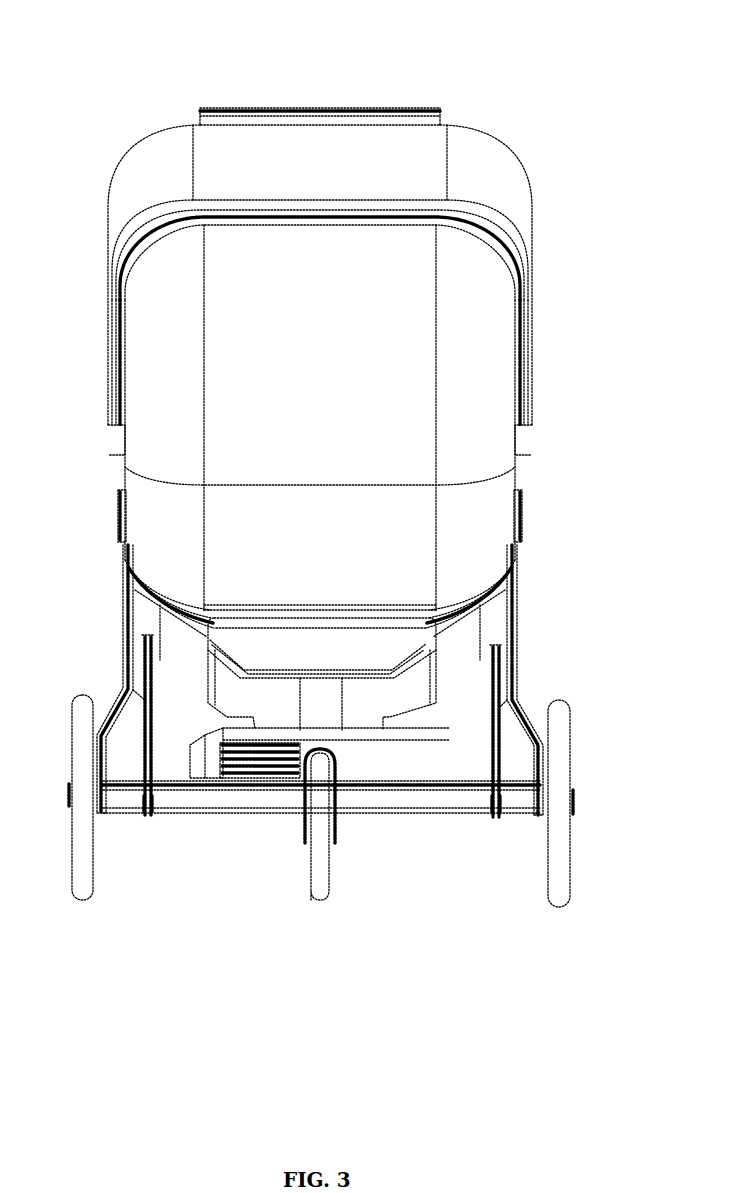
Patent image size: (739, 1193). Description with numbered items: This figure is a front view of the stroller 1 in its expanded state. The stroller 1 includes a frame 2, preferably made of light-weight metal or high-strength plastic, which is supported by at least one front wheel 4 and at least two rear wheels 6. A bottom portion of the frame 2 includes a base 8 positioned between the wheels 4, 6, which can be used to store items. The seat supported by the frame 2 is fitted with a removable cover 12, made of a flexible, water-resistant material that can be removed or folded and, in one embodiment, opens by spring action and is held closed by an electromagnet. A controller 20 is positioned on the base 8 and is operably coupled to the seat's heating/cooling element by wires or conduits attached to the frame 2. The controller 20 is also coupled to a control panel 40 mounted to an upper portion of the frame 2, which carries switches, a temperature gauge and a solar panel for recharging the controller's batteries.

The stroller 1 is at (560, 100).
The frame 2 is at (520, 642).
The front wheel 4 is at (313, 898).
The rear wheels 6 is at (72, 745).
The base 8 is at (473, 782).
The removable cover 12 is at (325, 170).
The controller 20 is at (388, 766).
The control panel 40 is at (374, 107).